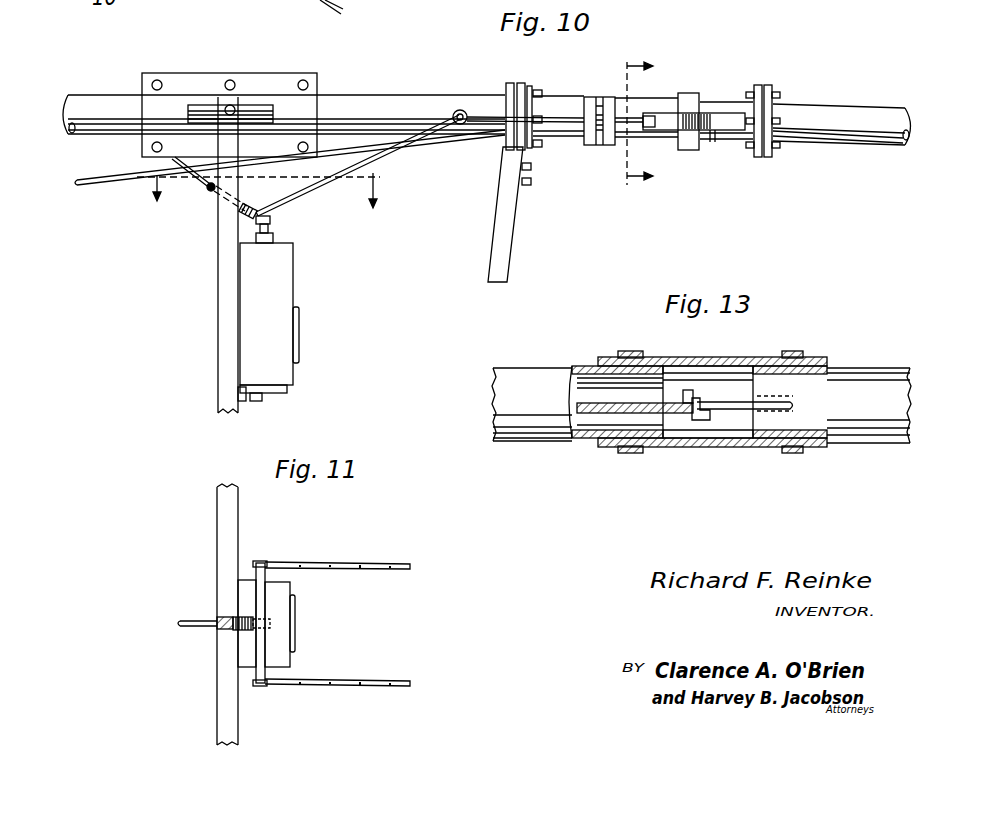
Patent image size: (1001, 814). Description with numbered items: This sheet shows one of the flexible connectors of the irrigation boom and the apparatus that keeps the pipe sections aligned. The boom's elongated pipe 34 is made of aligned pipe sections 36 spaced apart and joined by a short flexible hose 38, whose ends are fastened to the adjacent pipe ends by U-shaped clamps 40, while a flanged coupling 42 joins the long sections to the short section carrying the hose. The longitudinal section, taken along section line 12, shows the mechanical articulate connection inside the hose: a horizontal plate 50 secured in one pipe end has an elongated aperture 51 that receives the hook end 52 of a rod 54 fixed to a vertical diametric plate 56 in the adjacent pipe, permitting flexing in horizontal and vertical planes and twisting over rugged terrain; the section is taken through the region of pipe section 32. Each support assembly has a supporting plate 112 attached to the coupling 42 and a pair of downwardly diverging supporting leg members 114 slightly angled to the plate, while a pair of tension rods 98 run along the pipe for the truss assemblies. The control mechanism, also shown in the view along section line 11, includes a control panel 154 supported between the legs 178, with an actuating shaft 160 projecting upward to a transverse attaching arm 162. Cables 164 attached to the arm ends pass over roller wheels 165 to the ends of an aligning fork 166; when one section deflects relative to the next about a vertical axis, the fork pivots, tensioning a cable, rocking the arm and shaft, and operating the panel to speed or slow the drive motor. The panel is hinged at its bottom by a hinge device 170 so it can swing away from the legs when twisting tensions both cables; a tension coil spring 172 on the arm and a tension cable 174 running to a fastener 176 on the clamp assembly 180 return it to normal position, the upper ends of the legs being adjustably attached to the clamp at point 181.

In FIG. 13, the first pipe section 32 is at (514, 372).
In FIG. 10, the elongated pipe 34 is at (869, 109).
In FIG. 10, the pipe section 36 is at (387, 106).
In FIG. 13, the pipe section 36 is at (882, 381).
In FIG. 13, the flexible hose 38 is at (728, 447).
In FIG. 10, the clamp 40 is at (607, 97).
In FIG. 13, the clamp 40 is at (626, 458).
In FIG. 10, the flanged coupling 42 is at (767, 86).
In FIG. 13, the plate 50 is at (578, 406).
In FIG. 13, the elongated aperture 51 is at (688, 392).
In FIG. 13, the hook end 52 is at (700, 421).
In FIG. 13, the rod 54 is at (713, 401).
In FIG. 13, the diametric plate 56 is at (829, 378).
In FIG. 10, the tension rod 98 is at (110, 184).
In FIG. 10, the section line 11— 11 is at (260, 203).
In FIG. 10, the section line 12— 12 is at (650, 123).
In FIG. 10, the supporting plate 112 is at (519, 84).
In FIG. 10, the supporting leg member 114 is at (500, 258).
In FIG. 10, the control panel 154 is at (285, 295).
In FIG. 11, the control panel 154 is at (284, 589).
In FIG. 10, the actuating shaft 160 is at (275, 236).
In FIG. 10, the attaching arm 162 is at (270, 222).
In FIG. 11, the attaching arm 162 is at (268, 655).
In FIG. 10, the cable 164 is at (382, 150).
In FIG. 11, the cable 164 is at (386, 562).
In FIG. 10, the roller wheel 165 is at (463, 124).
In FIG. 10, the aligning fork 166 is at (713, 142).
In FIG. 10, the hinge device 170 is at (254, 397).
In FIG. 10, the tension coil spring 172 is at (247, 206).
In FIG. 11, the tension coil spring 172 is at (228, 629).
In FIG. 10, the tension cable 174 is at (200, 185).
In FIG. 11, the tension cable 174 is at (188, 619).
In FIG. 10, the fastener 176 is at (153, 148).
In FIG. 10, the leg 178 is at (220, 412).
In FIG. 10, the clamp assembly 180 is at (157, 103).
In FIG. 10, the adjustable attachment point 181 is at (234, 105).